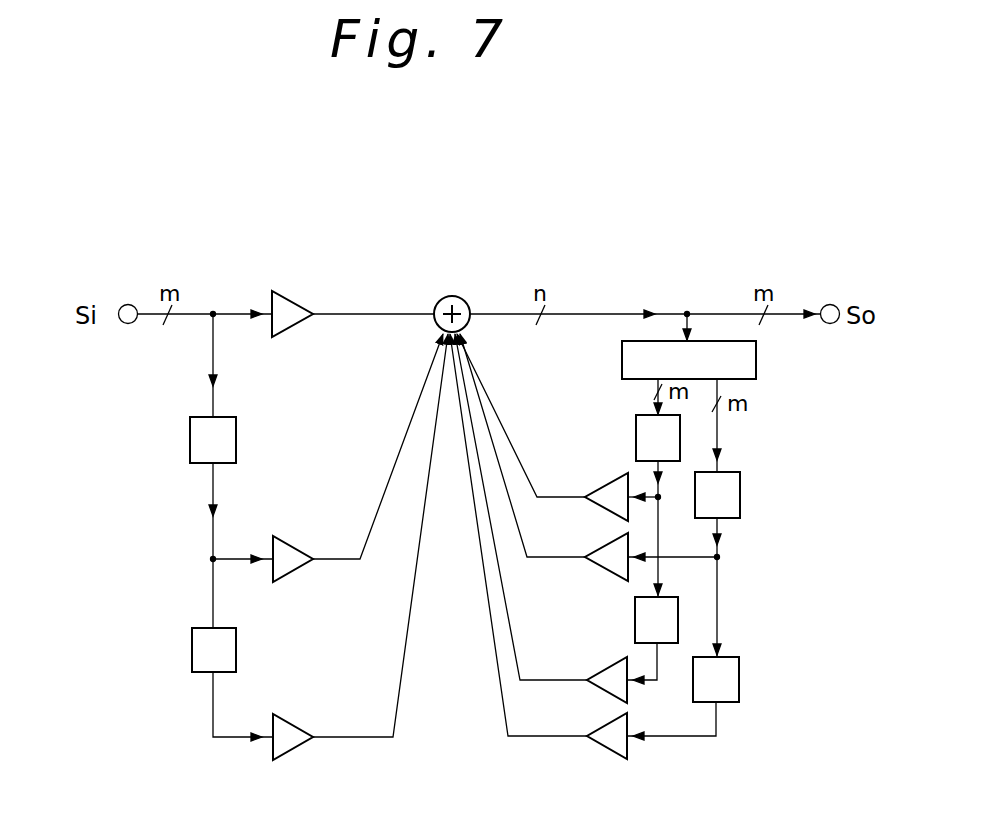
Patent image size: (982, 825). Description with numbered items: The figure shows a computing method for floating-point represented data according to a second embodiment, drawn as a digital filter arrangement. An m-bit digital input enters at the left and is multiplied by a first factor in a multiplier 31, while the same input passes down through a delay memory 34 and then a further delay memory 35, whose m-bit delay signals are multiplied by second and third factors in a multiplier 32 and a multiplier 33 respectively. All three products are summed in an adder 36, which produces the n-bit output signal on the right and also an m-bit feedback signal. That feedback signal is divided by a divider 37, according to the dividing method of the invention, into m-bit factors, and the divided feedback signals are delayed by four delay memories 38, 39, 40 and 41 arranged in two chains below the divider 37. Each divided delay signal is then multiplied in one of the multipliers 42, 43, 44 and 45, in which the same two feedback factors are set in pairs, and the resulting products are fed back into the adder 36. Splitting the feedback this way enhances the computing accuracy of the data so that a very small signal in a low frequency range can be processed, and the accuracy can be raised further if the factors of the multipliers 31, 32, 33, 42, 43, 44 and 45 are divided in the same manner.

The multiplier 31 is at (271, 292).
The multiplier 32 is at (274, 538).
The multiplier 33 is at (274, 714).
The delay memory 34 is at (190, 432).
The delay memory 35 is at (192, 652).
The adder 36 is at (453, 296).
The divider 37 is at (756, 357).
The delay memory 38 is at (636, 433).
The delay memory 39 is at (740, 497).
The delay memory 40 is at (635, 620).
The delay memory 41 is at (739, 672).
The multiplier 42 is at (592, 490).
The multiplier 43 is at (592, 554).
The multiplier 44 is at (591, 672).
The multiplier 45 is at (584, 730).